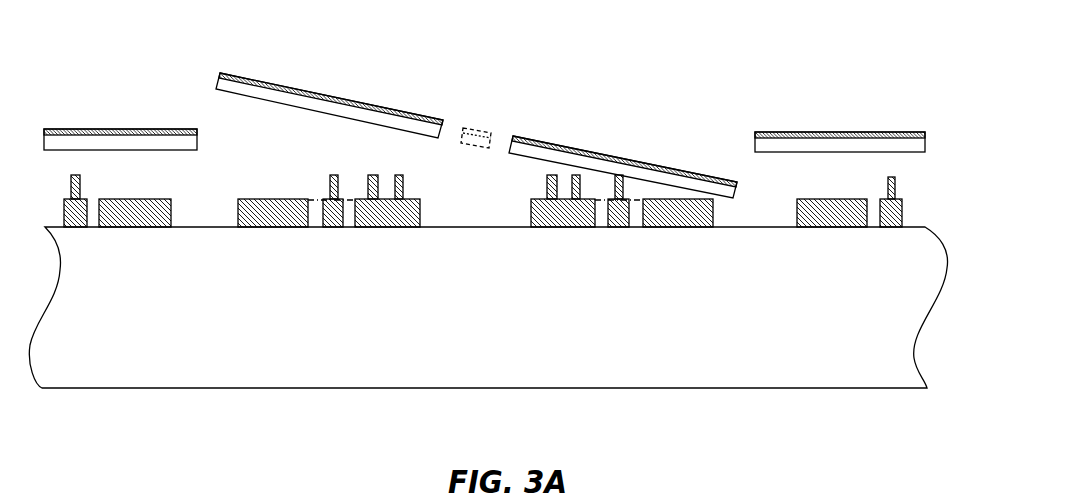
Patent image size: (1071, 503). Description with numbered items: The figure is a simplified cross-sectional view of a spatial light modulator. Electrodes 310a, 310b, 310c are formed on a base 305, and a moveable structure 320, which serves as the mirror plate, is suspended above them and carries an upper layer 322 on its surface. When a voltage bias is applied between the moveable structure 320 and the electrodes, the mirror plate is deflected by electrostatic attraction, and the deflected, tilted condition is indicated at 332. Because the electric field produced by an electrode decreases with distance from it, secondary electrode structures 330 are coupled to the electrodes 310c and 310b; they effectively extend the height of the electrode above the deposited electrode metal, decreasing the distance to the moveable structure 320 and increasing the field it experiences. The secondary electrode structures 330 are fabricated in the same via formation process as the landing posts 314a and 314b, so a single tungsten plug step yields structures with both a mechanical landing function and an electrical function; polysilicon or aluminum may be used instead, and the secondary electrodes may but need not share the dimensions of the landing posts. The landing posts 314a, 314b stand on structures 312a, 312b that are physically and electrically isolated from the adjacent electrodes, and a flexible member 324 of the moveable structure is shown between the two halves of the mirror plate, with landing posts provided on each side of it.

The substrate 305 is at (880, 369).
The electrode 310a is at (270, 220).
The electrode 310b is at (573, 218).
The electrode 310c is at (388, 218).
The structure 312a is at (327, 218).
The structure 312b is at (618, 218).
The landing post 314a is at (327, 190).
The landing post 314b is at (626, 190).
The moveable structure 320 is at (216, 88).
The shutter coating layer 322 is at (315, 93).
The flexible member 324 is at (480, 128).
The secondary electrode structure 330 is at (636, 84).
The tilted shutter 332 is at (613, 164).